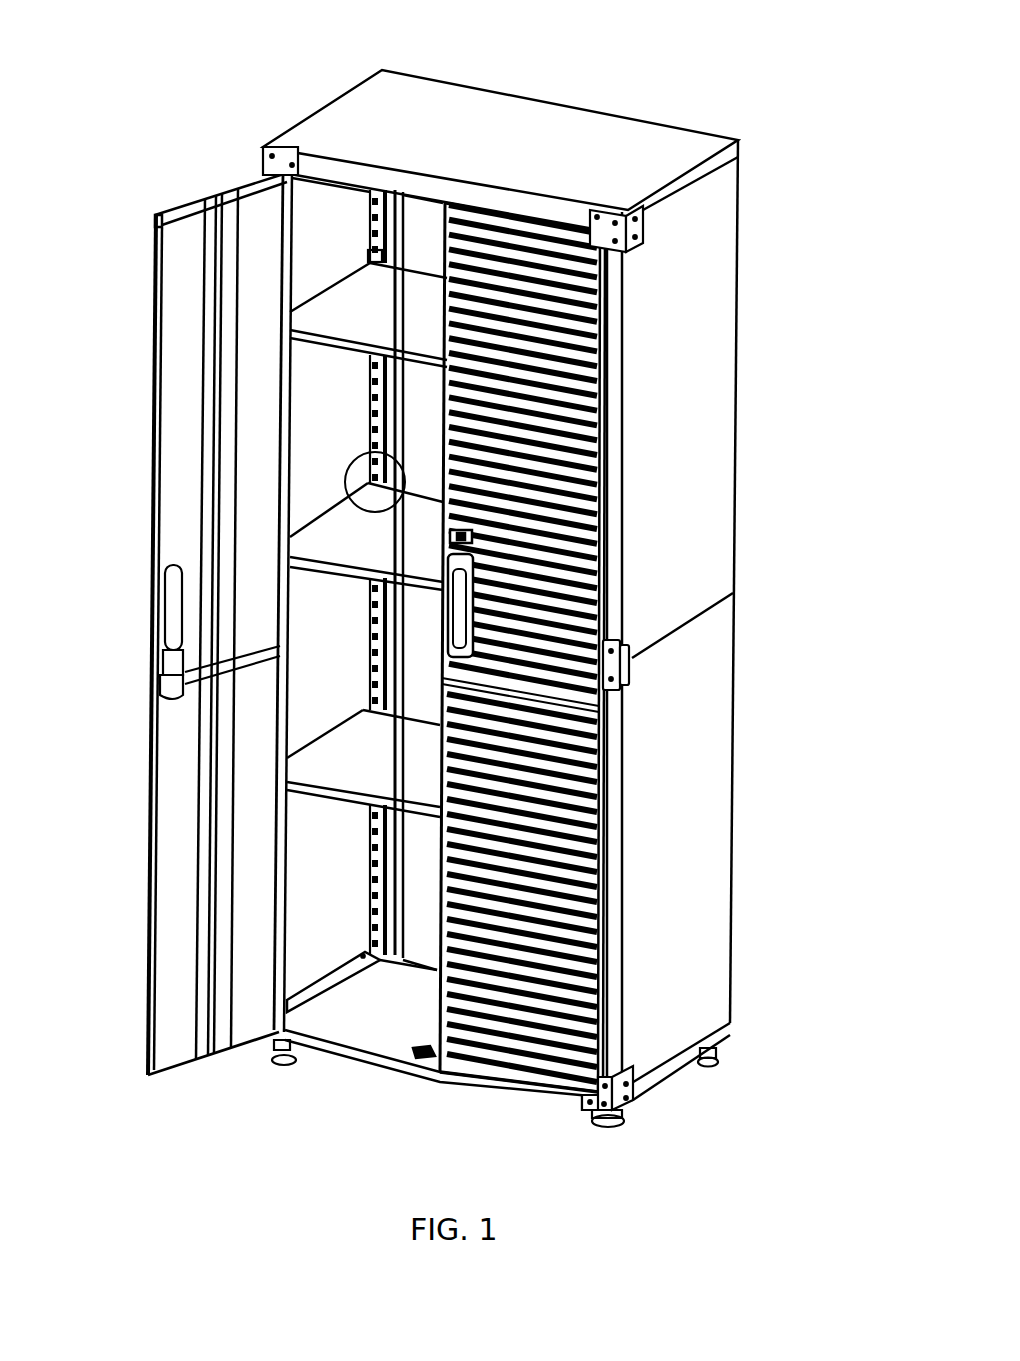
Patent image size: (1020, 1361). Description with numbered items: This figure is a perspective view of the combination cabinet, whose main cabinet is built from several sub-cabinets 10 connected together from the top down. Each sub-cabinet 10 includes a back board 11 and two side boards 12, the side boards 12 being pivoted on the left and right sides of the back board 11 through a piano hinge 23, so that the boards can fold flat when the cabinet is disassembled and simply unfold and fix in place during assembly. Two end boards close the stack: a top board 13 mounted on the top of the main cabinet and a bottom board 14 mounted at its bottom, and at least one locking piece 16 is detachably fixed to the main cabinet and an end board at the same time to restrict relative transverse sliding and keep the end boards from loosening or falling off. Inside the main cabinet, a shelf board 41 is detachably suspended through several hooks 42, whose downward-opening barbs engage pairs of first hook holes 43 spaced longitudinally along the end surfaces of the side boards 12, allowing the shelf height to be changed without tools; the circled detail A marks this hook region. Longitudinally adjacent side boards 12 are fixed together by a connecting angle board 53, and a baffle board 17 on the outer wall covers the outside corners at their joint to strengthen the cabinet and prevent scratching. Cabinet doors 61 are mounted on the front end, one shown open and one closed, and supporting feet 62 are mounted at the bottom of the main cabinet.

The sub-cabinet 10 is at (747, 392).
The back board 11 is at (420, 232).
The side board 12 is at (323, 248).
The top board 13 is at (370, 108).
The bottom board 14 is at (372, 1063).
The locking piece 16 is at (265, 150).
The baffle board 17 is at (633, 640).
The piano hinge 23 is at (397, 235).
The shelf board 41 is at (330, 318).
The hook 42 is at (367, 258).
The first hook hole 43 is at (367, 257).
The connecting angle board 53 is at (150, 653).
The cabinet door 61 is at (188, 507).
The supporting foot 62 is at (277, 1065).
The detail circle A is at (350, 465).